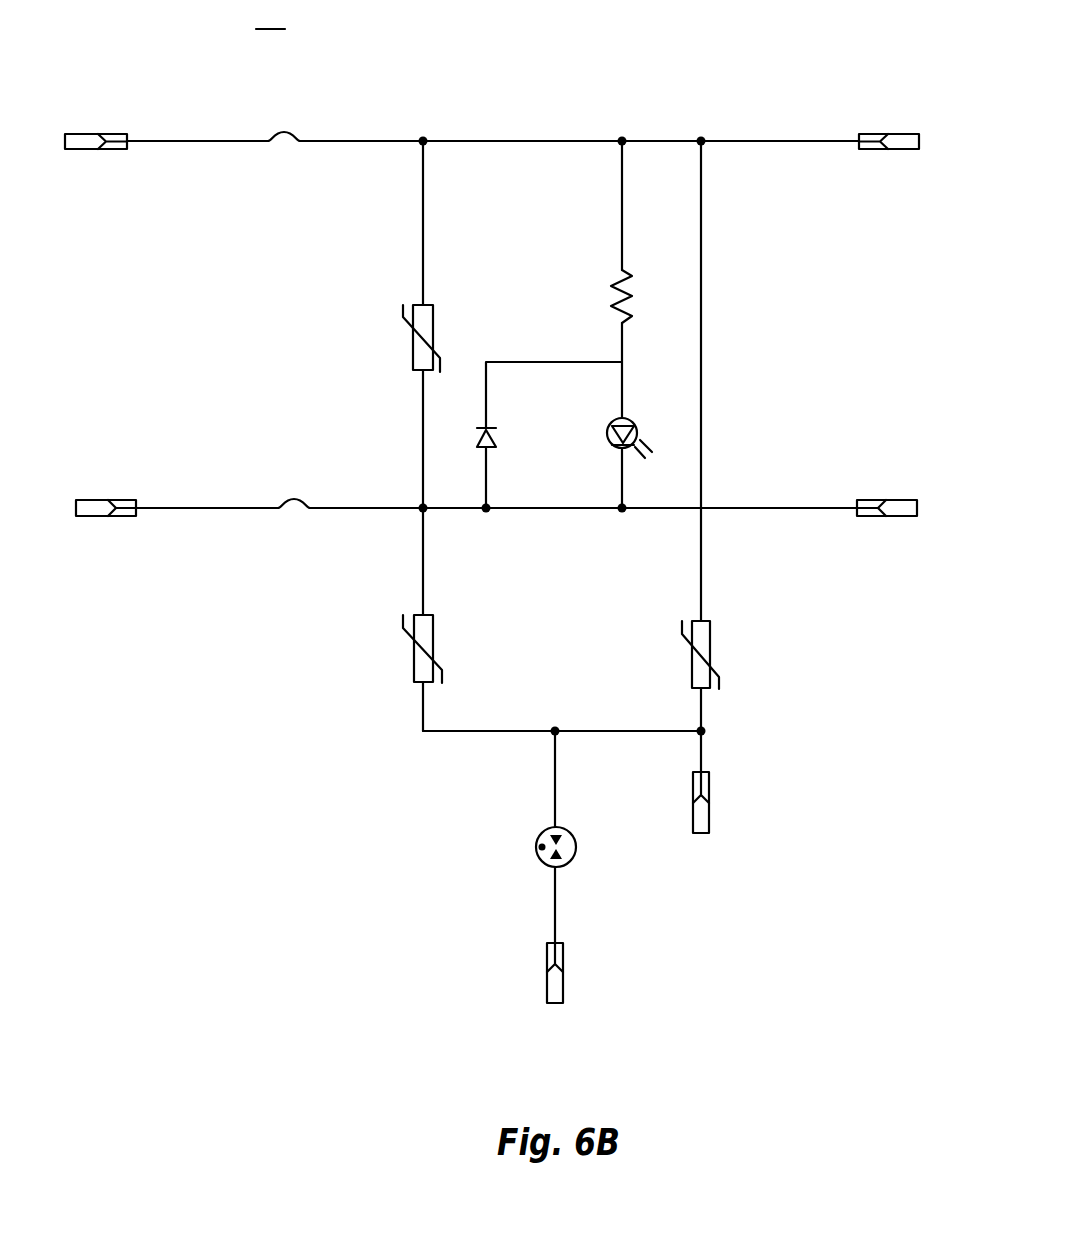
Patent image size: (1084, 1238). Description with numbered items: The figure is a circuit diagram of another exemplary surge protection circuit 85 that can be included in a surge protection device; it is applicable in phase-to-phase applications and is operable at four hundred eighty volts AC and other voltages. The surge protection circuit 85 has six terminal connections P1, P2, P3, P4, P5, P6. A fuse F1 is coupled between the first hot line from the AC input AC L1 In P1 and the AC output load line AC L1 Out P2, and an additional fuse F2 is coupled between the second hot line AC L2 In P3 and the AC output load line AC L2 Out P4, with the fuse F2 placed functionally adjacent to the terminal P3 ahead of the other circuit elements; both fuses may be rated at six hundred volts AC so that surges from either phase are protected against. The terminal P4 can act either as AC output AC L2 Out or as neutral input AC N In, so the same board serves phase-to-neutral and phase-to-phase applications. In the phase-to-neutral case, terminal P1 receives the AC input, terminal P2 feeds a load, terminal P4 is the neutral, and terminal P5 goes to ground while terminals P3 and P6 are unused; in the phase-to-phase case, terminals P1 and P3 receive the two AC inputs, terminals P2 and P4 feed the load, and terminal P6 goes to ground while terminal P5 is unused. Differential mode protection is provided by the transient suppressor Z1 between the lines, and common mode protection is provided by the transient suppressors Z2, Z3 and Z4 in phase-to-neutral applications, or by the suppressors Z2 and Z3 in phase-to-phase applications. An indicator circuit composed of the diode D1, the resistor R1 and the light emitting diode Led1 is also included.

The surge protection circuit 85 is at (500, 521).
The AC L1 In terminal connection P1 is at (99, 109).
The AC L1 Out terminal connection P2 is at (891, 108).
The AC L2 In terminal connection P3 is at (105, 477).
The AC L2 Out / AC N In terminal connection P4 is at (891, 499).
The ground terminal connection P5 is at (558, 992).
The ground terminal connection P6 is at (736, 809).
The fuse F1 is at (288, 139).
The additional fuse F2 is at (296, 507).
The transient suppressor Z1 is at (448, 335).
The transient suppressor Z2 is at (451, 649).
The transient suppressor Z3 is at (729, 654).
The transient suppressor Z4 is at (588, 880).
The resistor R1 is at (628, 291).
The diode D1 is at (510, 451).
The light emitting diode Led1 is at (626, 441).